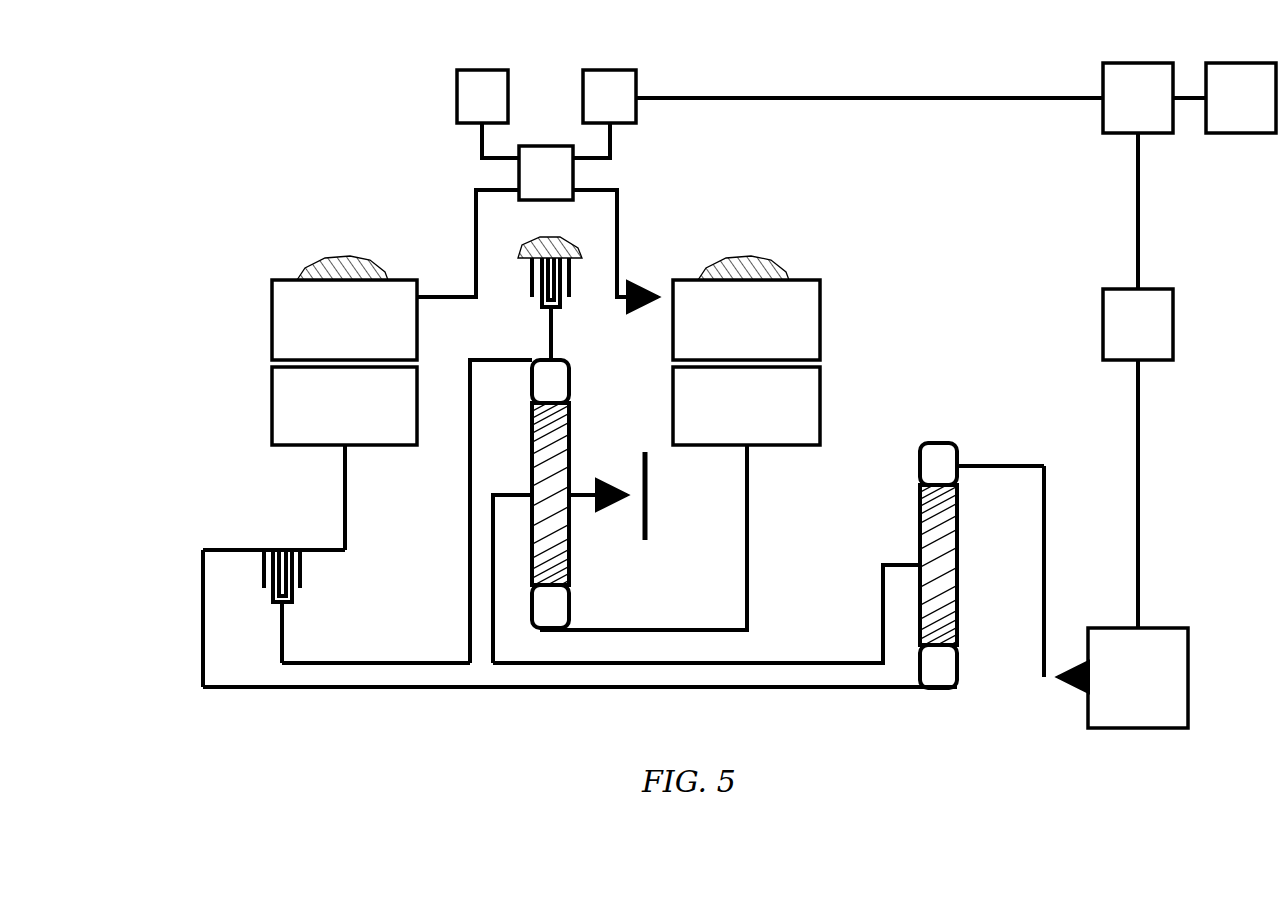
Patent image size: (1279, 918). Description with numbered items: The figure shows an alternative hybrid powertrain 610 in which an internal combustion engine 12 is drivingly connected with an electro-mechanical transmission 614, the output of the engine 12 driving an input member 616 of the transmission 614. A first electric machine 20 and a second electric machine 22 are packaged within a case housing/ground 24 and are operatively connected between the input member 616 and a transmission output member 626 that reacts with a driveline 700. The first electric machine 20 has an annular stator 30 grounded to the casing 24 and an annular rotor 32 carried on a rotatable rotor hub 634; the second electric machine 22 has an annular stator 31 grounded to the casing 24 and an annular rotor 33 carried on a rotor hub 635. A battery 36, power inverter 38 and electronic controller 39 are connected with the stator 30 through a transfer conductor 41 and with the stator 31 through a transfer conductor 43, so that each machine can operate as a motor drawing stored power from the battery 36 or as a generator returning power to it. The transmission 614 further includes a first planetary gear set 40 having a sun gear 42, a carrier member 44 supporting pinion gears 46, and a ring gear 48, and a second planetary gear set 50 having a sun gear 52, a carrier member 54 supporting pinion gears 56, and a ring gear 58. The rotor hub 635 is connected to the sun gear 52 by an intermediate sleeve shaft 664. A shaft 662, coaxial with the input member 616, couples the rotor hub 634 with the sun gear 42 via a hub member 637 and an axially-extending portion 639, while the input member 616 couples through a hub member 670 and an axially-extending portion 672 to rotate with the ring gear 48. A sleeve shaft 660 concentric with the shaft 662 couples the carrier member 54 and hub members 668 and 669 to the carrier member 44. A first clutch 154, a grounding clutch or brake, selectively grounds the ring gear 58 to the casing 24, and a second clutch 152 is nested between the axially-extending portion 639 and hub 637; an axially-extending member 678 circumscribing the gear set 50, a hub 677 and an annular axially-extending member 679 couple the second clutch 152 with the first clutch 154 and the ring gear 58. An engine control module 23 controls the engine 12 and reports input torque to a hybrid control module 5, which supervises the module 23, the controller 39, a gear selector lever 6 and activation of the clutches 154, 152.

The hybrid control module 5 is at (1154, 176).
The gear selector lever 6 is at (1241, 98).
The internal combustion engine 12 is at (1123, 678).
The first electric machine 20 is at (248, 373).
The second electric machine 22 is at (830, 360).
The engine control module 23 is at (1138, 458).
The case housing/ground 24 is at (335, 258).
The annular stator 30 is at (344, 320).
The annular stator 31 is at (746, 320).
The annular rotor 32 is at (344, 406).
The annular rotor 33 is at (746, 406).
The battery 36 is at (488, 114).
The power inverter 38 is at (546, 173).
The electronic controller 39 is at (838, 114).
The first planetary gear set 40 is at (972, 540).
The transfer conductor 41 is at (450, 295).
The sun gear 42 is at (962, 668).
The transfer conductor 43 is at (620, 245).
The carrier member 44 is at (900, 564).
The pinion gears 46 is at (962, 525).
The ring gear 48 is at (938, 442).
The second planetary gear set 50 is at (589, 491).
The sun gear 52 is at (572, 608).
The carrier member 54 is at (515, 495).
The pinion gears 56 is at (570, 440).
The ring gear 58 is at (575, 380).
The second clutch 152 is at (305, 596).
The first clutch 154 is at (572, 283).
The hybrid powertrain 610 is at (860, 270).
The electro-mechanical transmission 614 is at (250, 270).
The input member 616 is at (1075, 681).
The transmission output member 626 is at (608, 497).
The rotor hub 634 is at (343, 515).
The rotor hub 635 is at (750, 497).
The hub member 637 is at (200, 612).
The axially-extending portion 639 is at (228, 549).
The sleeve shaft 660 is at (813, 661).
The shaft 662 is at (680, 691).
The sleeve shaft 664 is at (722, 628).
The hub member 668 is at (491, 540).
The hub member 669 is at (882, 590).
The hub member 670 is at (1047, 545).
The axially-extending portion 672 is at (986, 464).
The hub 677 is at (468, 505).
The axially-extending member 678 is at (515, 357).
The axially-extending member 679 is at (405, 661).
The driveline 700 is at (648, 486).